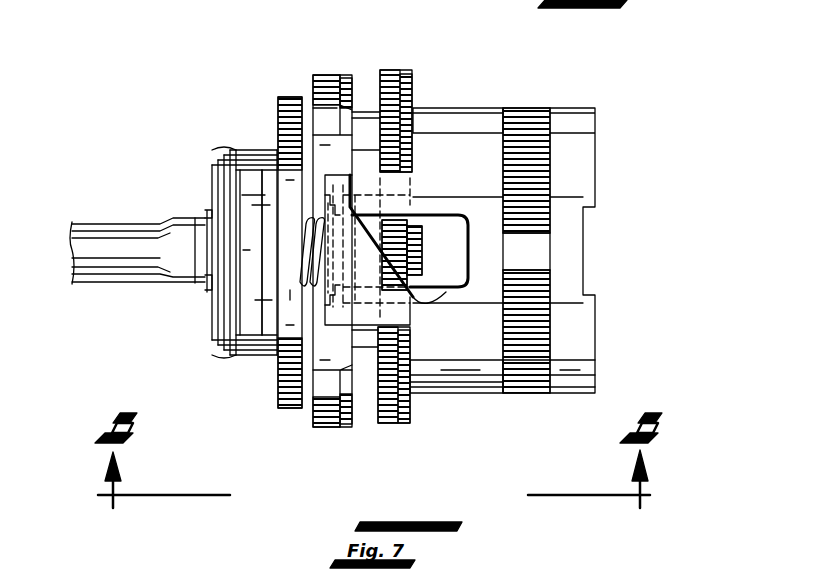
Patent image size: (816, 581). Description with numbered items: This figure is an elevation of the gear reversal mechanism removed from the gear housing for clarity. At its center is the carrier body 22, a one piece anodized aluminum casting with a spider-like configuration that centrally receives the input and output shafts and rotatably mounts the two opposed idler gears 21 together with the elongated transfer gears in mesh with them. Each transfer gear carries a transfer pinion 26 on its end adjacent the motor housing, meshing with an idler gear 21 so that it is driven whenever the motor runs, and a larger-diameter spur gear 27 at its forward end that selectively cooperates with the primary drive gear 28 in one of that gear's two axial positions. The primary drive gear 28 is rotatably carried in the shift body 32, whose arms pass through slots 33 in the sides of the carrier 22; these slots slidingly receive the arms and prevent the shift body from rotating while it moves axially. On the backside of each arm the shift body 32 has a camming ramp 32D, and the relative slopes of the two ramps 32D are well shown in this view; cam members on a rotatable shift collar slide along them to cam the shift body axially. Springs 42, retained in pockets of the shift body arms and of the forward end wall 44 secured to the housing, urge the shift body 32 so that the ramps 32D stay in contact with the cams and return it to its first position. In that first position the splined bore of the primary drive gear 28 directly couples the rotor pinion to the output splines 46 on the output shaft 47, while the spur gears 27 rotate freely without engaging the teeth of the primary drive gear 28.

The idler gears 21 is at (538, 322).
The carrier body 22 is at (460, 142).
The transfer pinion 26 is at (531, 373).
The spur gear 27 is at (392, 70).
The primary drive gear 28 is at (406, 225).
The shift body 32 is at (326, 191).
The camming ramp 32D is at (412, 278).
The slots 33 is at (446, 292).
The springs 42 is at (305, 232).
The forward end wall 44 is at (290, 410).
The output splines 46 is at (424, 236).
The output shaft 47 is at (207, 221).